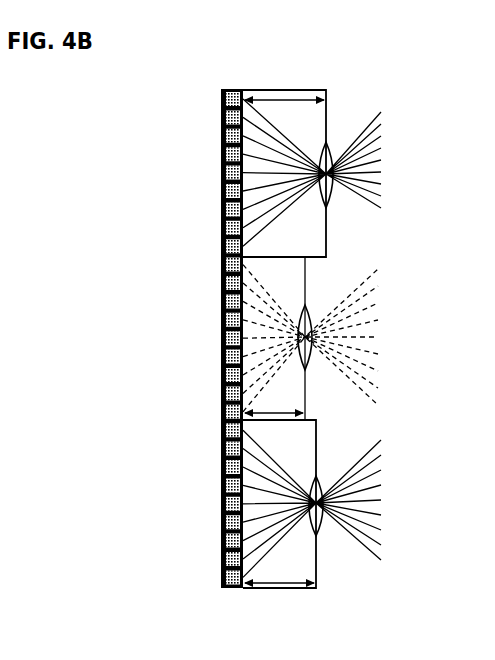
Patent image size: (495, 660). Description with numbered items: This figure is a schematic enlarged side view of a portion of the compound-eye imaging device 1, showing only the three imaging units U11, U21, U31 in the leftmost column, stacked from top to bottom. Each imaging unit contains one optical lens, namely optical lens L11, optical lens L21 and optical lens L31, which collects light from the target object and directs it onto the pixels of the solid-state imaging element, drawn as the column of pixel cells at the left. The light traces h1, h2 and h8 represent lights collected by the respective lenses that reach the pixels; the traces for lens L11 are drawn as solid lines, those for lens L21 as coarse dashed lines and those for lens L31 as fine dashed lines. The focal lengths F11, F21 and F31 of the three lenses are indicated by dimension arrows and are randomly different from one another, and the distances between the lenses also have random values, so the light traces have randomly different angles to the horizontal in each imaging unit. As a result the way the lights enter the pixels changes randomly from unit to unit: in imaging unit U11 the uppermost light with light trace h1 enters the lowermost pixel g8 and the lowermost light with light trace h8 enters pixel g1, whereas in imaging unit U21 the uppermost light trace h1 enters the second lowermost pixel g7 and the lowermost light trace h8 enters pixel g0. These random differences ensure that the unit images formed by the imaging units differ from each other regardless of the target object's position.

The compound-eye imaging device 1 is at (318, 22).
The imaging unit U11 is at (108, 170).
The imaging unit U21 is at (110, 333).
The imaging unit U31 is at (116, 507).
The optical lens L11 is at (333, 140).
The optical lens L21 is at (314, 309).
The optical lens L31 is at (319, 477).
The focal length F11 is at (284, 99).
The focal length F21 is at (273, 412).
The focal length F31 is at (270, 590).
The pixel g0 is at (221, 99).
The pixel g1 is at (221, 117).
The pixel g7 is at (221, 393).
The pixel g8 is at (221, 246).
The light trace h1 is at (381, 112).
The light trace h2 is at (381, 124).
The light trace h8 is at (381, 208).